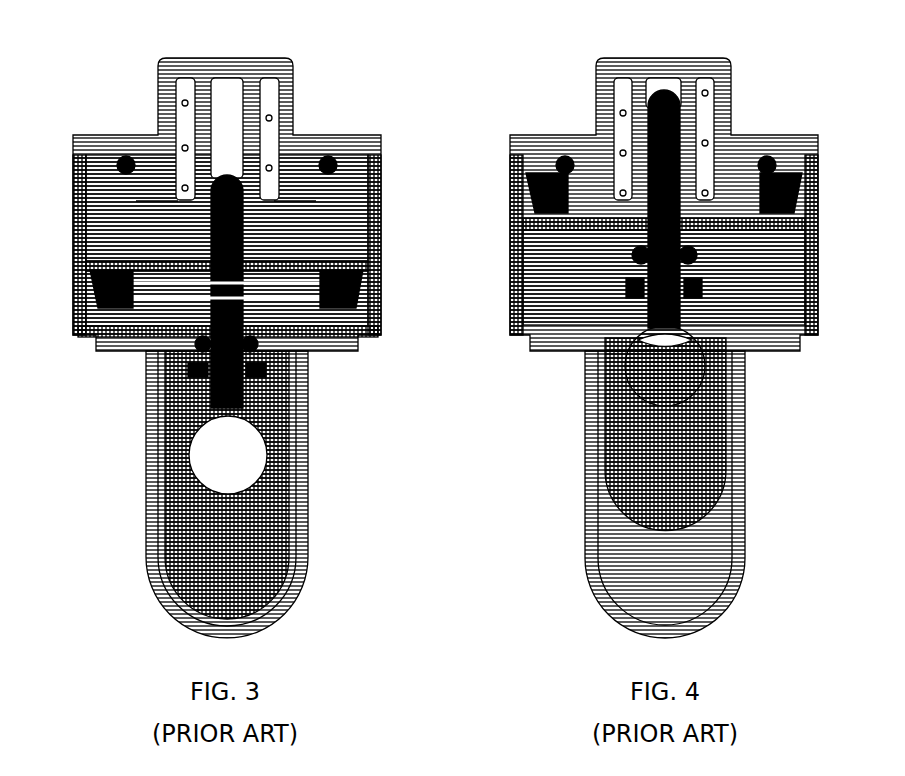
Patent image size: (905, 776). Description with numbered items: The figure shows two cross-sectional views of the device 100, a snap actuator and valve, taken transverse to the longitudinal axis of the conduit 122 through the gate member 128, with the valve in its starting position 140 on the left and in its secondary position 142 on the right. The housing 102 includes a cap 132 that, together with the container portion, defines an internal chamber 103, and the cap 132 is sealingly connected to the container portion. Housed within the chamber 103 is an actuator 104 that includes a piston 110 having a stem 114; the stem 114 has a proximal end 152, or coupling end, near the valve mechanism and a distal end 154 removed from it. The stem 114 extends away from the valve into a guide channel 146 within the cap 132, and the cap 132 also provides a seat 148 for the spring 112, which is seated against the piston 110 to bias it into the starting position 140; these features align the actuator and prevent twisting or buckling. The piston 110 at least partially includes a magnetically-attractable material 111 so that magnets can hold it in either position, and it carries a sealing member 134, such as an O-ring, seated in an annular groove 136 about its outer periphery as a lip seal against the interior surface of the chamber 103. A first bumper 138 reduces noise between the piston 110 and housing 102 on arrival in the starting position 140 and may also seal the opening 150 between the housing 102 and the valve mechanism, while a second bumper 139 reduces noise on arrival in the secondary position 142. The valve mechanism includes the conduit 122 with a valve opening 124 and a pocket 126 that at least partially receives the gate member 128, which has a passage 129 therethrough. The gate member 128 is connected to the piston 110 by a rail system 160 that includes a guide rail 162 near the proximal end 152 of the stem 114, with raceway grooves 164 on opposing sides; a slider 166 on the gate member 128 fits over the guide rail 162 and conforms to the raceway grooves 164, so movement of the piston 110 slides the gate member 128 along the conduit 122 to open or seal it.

In FIG. 4, the device 100 is at (507, 36).
In FIG. 3, the housing 102 is at (373, 145).
In FIG. 4, the housing 102 is at (502, 145).
In FIG. 3, the internal chamber 103 is at (95, 190).
In FIG. 4, the internal chamber 103 is at (800, 284).
In FIG. 3, the actuator 104 is at (502, 204).
In FIG. 4, the actuator 104 is at (502, 204).
In FIG. 3, the piston 110 is at (502, 240).
In FIG. 4, the piston 110 is at (502, 240).
In FIG. 3, the magnetically-attractable material 111 is at (150, 287).
In FIG. 4, the magnetically-attractable material 111 is at (580, 230).
In FIG. 3, the spring 112 is at (265, 72).
In FIG. 4, the spring 112 is at (703, 80).
In FIG. 3, the stem 114 is at (230, 247).
In FIG. 4, the stem 114 is at (662, 125).
In FIG. 3, the conduit 122 is at (302, 548).
In FIG. 4, the conduit 122 is at (738, 452).
In FIG. 3, the valve opening 124 is at (205, 437).
In FIG. 3, the pocket 126 is at (250, 604).
In FIG. 4, the pocket 126 is at (646, 584).
In FIG. 3, the gate member 128 is at (208, 556).
In FIG. 4, the gate member 128 is at (646, 473).
In FIG. 3, the passage 129 is at (260, 480).
In FIG. 4, the passage 129 is at (625, 375).
In FIG. 3, the cap 132 is at (72, 133).
In FIG. 4, the cap 132 is at (508, 133).
In FIG. 3, the sealing member 134 is at (355, 285).
In FIG. 4, the sealing member 134 is at (795, 190).
In FIG. 3, the annular groove 136 is at (373, 323).
In FIG. 4, the annular groove 136 is at (810, 225).
In FIG. 4, the first bumper 138 is at (690, 248).
In FIG. 3, the second bumper 139 is at (118, 148).
In FIG. 4, the second bumper 139 is at (557, 148).
In FIG. 3, the starting position 140 is at (348, 355).
In FIG. 4, the secondary position 142 is at (814, 159).
In FIG. 3, the guide channel 146 is at (218, 70).
In FIG. 4, the guide channel 146 is at (652, 70).
In FIG. 3, the seat 148 is at (177, 72).
In FIG. 4, the seat 148 is at (612, 72).
In FIG. 4, the opening 150 is at (730, 360).
In FIG. 3, the proximal end 152 is at (200, 420).
In FIG. 4, the proximal end 152 is at (655, 335).
In FIG. 3, the distal end 154 is at (205, 195).
In FIG. 3, the rail system 160 is at (292, 387).
In FIG. 4, the rail system 160 is at (723, 303).
In FIG. 3, the guide rail 162 is at (248, 362).
In FIG. 4, the guide rail 162 is at (690, 282).
In FIG. 3, the raceway grooves 164 is at (225, 375).
In FIG. 4, the raceway grooves 164 is at (645, 288).
In FIG. 3, the slider 166 is at (182, 360).
In FIG. 4, the slider 166 is at (622, 282).